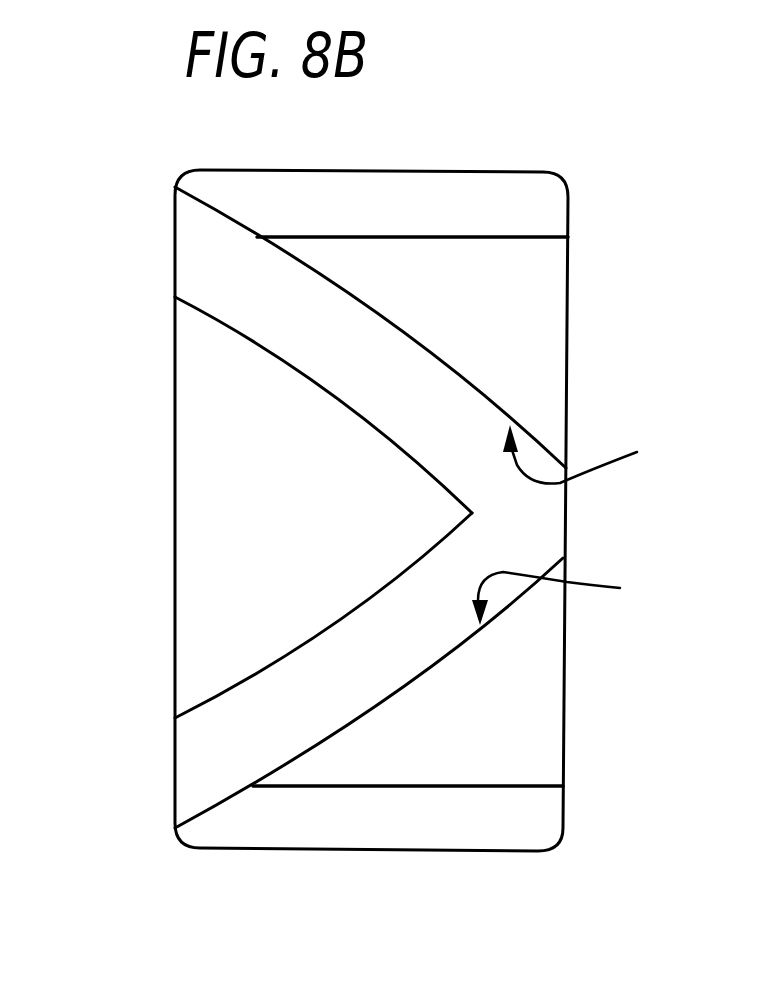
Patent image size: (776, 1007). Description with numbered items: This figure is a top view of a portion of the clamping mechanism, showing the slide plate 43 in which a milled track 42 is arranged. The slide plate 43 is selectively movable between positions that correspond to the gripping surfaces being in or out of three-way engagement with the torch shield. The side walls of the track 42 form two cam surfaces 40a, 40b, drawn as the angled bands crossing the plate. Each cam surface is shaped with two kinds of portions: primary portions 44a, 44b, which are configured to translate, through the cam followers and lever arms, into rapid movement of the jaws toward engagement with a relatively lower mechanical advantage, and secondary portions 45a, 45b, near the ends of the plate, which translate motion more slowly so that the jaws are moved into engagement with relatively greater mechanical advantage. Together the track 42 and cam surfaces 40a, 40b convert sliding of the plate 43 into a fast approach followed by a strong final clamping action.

The cam surface 40a is at (612, 454).
The cam surface 40b is at (582, 595).
The milled track 42 is at (437, 452).
The slide plate 43 is at (297, 608).
The primary portion 44a is at (483, 397).
The primary portion 44b is at (460, 647).
The secondary portion 45a is at (275, 248).
The secondary portion 45b is at (290, 762).